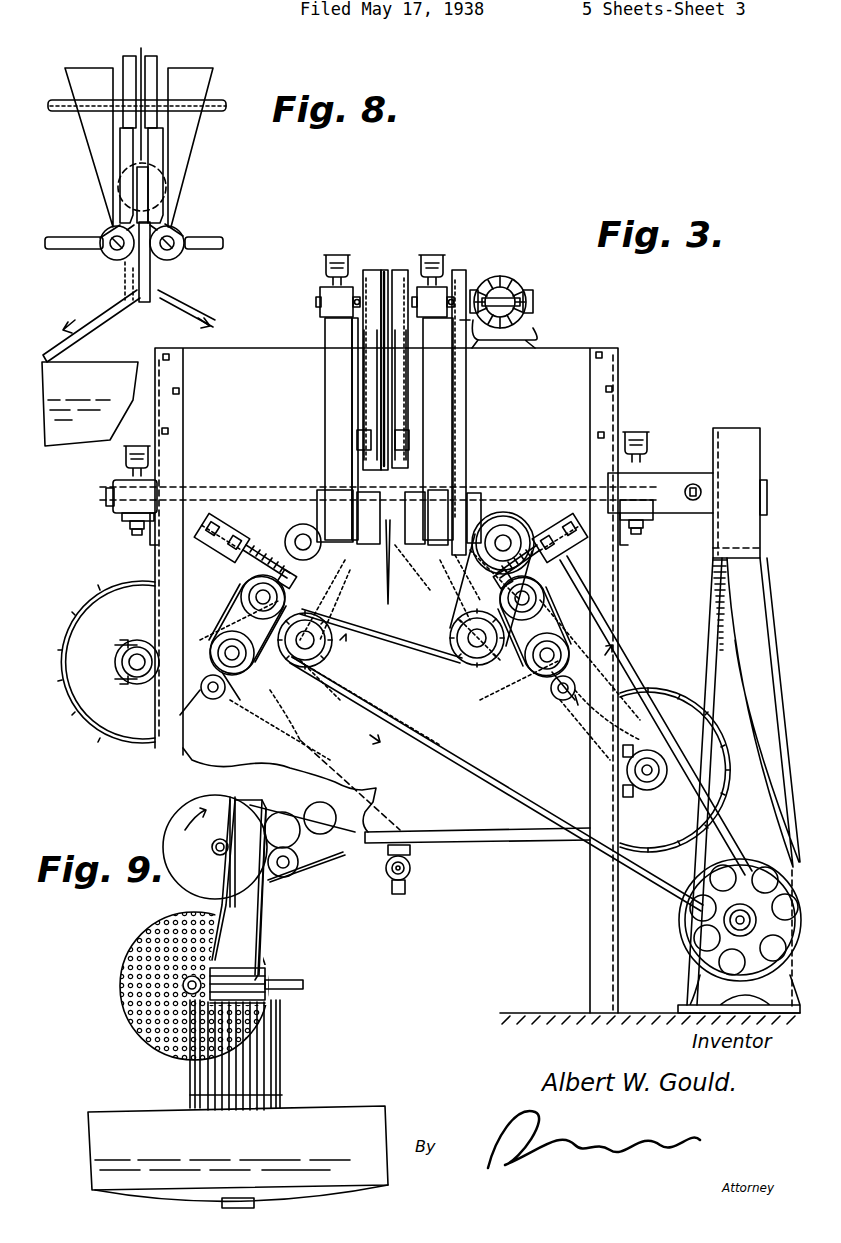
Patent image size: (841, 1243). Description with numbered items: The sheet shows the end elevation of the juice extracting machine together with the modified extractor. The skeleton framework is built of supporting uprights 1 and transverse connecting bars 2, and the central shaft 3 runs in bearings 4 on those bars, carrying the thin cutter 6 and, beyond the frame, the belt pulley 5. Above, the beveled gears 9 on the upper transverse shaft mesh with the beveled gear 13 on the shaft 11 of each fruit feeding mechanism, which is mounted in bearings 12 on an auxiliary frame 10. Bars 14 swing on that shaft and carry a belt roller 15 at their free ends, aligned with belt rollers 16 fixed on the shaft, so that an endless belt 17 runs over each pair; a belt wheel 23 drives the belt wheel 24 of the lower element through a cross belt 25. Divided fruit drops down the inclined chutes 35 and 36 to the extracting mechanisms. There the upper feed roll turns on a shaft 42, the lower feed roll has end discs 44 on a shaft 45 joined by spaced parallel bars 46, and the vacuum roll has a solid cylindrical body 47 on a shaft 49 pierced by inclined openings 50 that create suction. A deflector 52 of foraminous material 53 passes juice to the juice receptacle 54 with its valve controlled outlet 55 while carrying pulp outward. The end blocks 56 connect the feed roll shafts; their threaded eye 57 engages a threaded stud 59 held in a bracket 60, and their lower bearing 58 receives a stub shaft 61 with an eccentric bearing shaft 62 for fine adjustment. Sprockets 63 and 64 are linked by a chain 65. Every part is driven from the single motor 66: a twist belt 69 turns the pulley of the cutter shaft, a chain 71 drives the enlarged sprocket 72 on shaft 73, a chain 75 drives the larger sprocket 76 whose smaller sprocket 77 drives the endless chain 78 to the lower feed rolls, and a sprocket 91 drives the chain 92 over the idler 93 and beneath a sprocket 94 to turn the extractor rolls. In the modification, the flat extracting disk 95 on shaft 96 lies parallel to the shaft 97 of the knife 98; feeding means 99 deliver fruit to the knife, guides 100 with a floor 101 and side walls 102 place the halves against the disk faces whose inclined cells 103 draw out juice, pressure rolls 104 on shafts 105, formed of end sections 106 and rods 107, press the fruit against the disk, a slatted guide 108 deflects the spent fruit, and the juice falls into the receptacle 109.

In FIG. 3, the supporting uprights 1 is at (616, 403).
In FIG. 3, the transverse connecting bars 2 is at (648, 525).
In FIG. 3, the shaft 3 is at (112, 500).
In FIG. 3, the bearings 4 is at (124, 478).
In FIG. 3, the belt pulley 5 is at (712, 428).
In FIG. 3, the cutter 6 is at (392, 570).
In FIG. 3, the beveled gears 9 is at (480, 280).
In FIG. 3, the auxiliary frames 10 is at (325, 410).
In FIG. 3, the shaft 11 is at (386, 270).
In FIG. 3, the bearings 12 is at (320, 290).
In FIG. 3, the beveled gear 13 is at (512, 276).
In FIG. 3, the bars 14 is at (362, 365).
In FIG. 3, the belt roller 15 is at (367, 450).
In FIG. 3, the belt rollers 16 is at (371, 268).
In FIG. 3, the endless belt 17 is at (376, 380).
In FIG. 3, the belt wheel 23 is at (463, 285).
In FIG. 3, the belt wheel 24 is at (468, 458).
In FIG. 3, the cross belt 25 is at (468, 395).
In FIG. 3, the inclined chute 35 is at (438, 566).
In FIG. 3, the inclined chute 36 is at (349, 605).
In FIG. 3, the shaft 42 is at (261, 597).
In FIG. 3, the end discs 44 is at (215, 645).
In FIG. 3, the shaft 45 is at (234, 655).
In FIG. 3, the spaced parallel bars 46 is at (258, 672).
In FIG. 3, the solid cylindrical body 47 is at (350, 672).
In FIG. 3, the shaft 49 is at (315, 642).
In FIG. 3, the openings 50 is at (320, 685).
In FIG. 3, the deflector 52 is at (282, 748).
In FIG. 3, the foraminous material 53 is at (420, 730).
In FIG. 3, the juice receptacle 54 is at (475, 836).
In FIG. 3, the valve controlled outlet 55 is at (410, 866).
In FIG. 3, the end frames or blocks 56 is at (243, 598).
In FIG. 3, the threaded eye 57 is at (302, 530).
In FIG. 3, the bearing 58 is at (240, 705).
In FIG. 3, the threaded studs 59 is at (268, 545).
In FIG. 3, the brackets 60 is at (208, 535).
In FIG. 3, the stub shaft 61 is at (377, 712).
In FIG. 3, the bearing shaft 62 is at (213, 700).
In FIG. 3, the sprockets 63 is at (292, 578).
In FIG. 3, the sprockets 64 is at (235, 648).
In FIG. 3, the chain 65 is at (242, 605).
In FIG. 3, the motor 66 is at (685, 945).
In FIG. 3, the twist belt 69 is at (716, 612).
In FIG. 3, the chain 71 is at (680, 690).
In FIG. 3, the enlarged sprocket 72 is at (655, 696).
In FIG. 3, the shaft 73 is at (650, 775).
In FIG. 3, the chain 75 is at (101, 590).
In FIG. 3, the larger sprocket 76 is at (83, 618).
In FIG. 3, the smaller sprocket 77 is at (133, 640).
In FIG. 3, the endless chain 78 is at (123, 684).
In FIG. 3, the sprocket 91 is at (718, 958).
In FIG. 3, the chain 92 is at (665, 720).
In FIG. 3, the idler 93 is at (500, 515).
In FIG. 3, the sprocket 94 is at (455, 628).
In FIG. 8, the extracting disk 95 is at (145, 197).
In FIG. 9, the extracting disk 95 is at (153, 922).
In FIG. 3, the extracting disk 95 is at (330, 664).
In FIG. 8, the shaft 96 is at (183, 250).
In FIG. 9, the shaft 96 is at (128, 1010).
In FIG. 8, the shaft 97 is at (213, 112).
In FIG. 9, the shaft 97 is at (214, 852).
In FIG. 8, the knife 98 is at (143, 52).
In FIG. 9, the knife 98 is at (180, 822).
In FIG. 9, the feeding means 99 is at (322, 862).
In FIG. 8, the guides 100 is at (195, 176).
In FIG. 9, the guides 100 is at (258, 918).
In FIG. 9, the floor or upright wall 101 is at (260, 938).
In FIG. 8, the side walls 102 is at (205, 97).
In FIG. 9, the side walls 102 is at (265, 900).
In FIG. 8, the openings or cells 103 is at (130, 263).
In FIG. 9, the openings or cells 103 is at (183, 985).
In FIG. 8, the pressure rolls 104 is at (104, 232).
In FIG. 9, the pressure rolls 104 is at (255, 1042).
In FIG. 8, the shafts 105 is at (180, 236).
In FIG. 9, the shafts 105 is at (304, 985).
In FIG. 8, the end sections 106 is at (108, 258).
In FIG. 9, the end sections 106 is at (268, 972).
In FIG. 9, the bars or rods 107 is at (250, 1000).
In FIG. 8, the slatted guide 108 is at (75, 328).
In FIG. 9, the slatted guide 108 is at (282, 1074).
In FIG. 8, the receptacle 109 is at (90, 404).
In FIG. 9, the receptacle 109 is at (238, 1157).